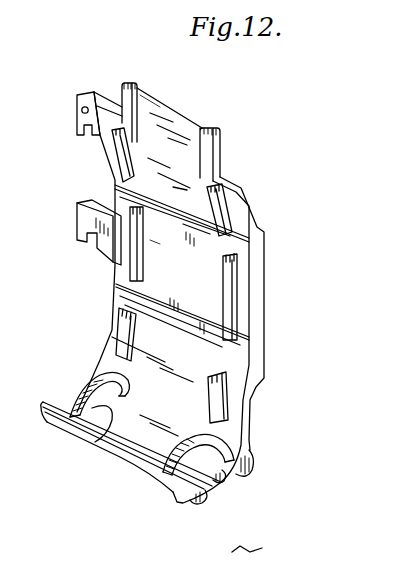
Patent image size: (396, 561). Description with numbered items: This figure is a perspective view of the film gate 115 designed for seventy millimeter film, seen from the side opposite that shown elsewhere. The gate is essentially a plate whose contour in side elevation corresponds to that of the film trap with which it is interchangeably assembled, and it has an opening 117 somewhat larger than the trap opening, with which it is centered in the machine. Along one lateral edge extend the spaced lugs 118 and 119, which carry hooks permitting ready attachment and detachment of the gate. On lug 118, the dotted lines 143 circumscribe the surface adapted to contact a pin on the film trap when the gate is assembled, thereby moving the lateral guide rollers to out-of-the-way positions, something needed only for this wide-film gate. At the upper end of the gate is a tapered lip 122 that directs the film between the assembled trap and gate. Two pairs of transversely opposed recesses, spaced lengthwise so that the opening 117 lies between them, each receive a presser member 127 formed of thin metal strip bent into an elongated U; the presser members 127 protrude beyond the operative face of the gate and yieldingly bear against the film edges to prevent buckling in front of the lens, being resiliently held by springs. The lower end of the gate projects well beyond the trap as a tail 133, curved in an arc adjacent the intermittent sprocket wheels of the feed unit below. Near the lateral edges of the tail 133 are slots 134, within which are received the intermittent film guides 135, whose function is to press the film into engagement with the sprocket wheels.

The film gate 115 is at (263, 336).
The opening 117 is at (195, 280).
The lug 118 is at (78, 107).
The lug 119 is at (77, 213).
The tapered lip 122 is at (183, 117).
The presser member 127 is at (113, 153).
The tail 133 is at (135, 452).
The slot 134 is at (95, 442).
The intermittent film guide 135 is at (93, 390).
The dotted lines 143 is at (89, 107).